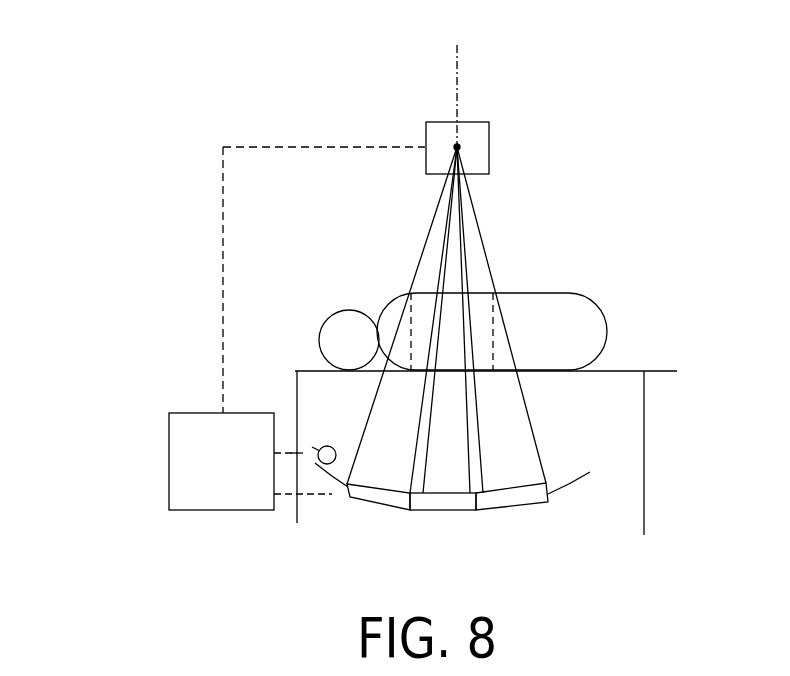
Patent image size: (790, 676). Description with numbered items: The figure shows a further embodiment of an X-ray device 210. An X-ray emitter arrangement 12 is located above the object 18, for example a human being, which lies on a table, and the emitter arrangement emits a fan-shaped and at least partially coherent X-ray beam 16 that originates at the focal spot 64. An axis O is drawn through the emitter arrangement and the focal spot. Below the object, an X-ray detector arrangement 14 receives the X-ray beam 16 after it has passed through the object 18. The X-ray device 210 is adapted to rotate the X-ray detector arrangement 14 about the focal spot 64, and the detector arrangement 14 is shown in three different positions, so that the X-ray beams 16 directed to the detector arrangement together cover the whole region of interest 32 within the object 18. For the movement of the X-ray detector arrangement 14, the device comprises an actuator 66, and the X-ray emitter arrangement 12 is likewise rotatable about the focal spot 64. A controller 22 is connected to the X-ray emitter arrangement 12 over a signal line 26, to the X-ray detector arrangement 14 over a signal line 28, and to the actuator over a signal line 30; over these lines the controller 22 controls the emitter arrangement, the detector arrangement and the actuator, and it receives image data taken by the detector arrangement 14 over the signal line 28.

The X-ray device 210 is at (158, 111).
The X-ray emitter arrangement 12 is at (430, 121).
The central axis O is at (459, 52).
The focal spot 64 is at (460, 147).
The X-ray beam 16 is at (440, 233).
The object 18 is at (606, 322).
The region of interest 32 is at (478, 307).
The signal line 26 is at (222, 228).
The controller 22 is at (168, 453).
The signal line 30 is at (297, 452).
The signal line 28 is at (321, 496).
The actuator 66 is at (328, 446).
The X-ray detector arrangement 14 is at (520, 506).